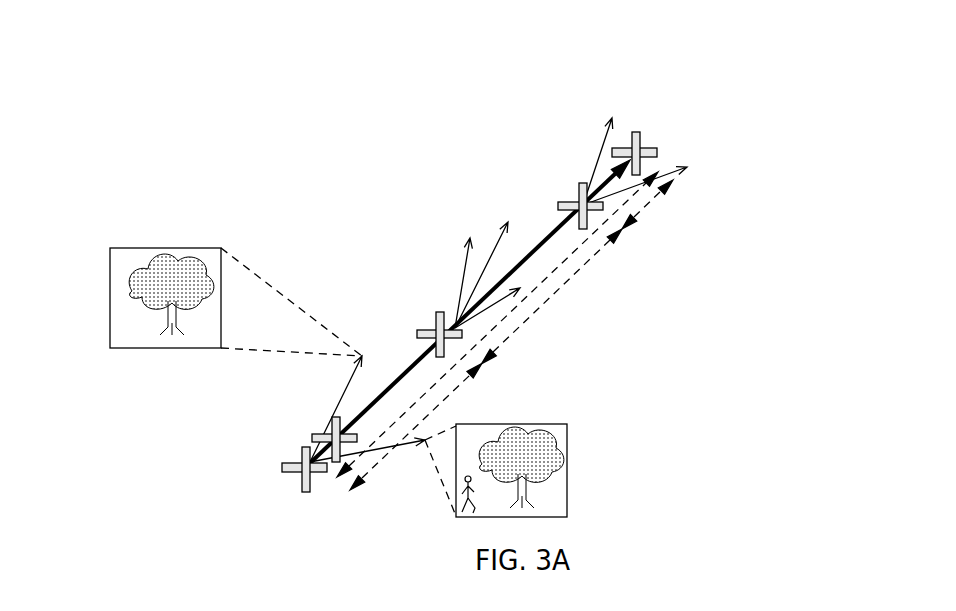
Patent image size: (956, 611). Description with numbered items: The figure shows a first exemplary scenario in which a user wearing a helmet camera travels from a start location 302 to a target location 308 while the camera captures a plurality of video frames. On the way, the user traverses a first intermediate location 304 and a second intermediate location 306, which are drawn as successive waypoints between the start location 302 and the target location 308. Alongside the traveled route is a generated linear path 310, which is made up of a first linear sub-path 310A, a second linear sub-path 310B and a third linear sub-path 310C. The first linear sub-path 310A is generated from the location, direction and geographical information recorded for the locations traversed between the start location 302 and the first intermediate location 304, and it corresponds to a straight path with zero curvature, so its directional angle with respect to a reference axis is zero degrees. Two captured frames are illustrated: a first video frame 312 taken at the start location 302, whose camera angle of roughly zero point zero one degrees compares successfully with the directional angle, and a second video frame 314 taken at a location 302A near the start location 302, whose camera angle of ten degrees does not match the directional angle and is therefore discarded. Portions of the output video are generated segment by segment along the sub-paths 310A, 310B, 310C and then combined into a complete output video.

The start location 302 is at (302, 462).
The location near the start location 302A is at (343, 412).
The first intermediate location 304 is at (430, 330).
The second intermediate location 306 is at (578, 200).
The target location 308 is at (630, 152).
The generated linear path 310 is at (527, 297).
The first linear sub-path 310A is at (432, 412).
The second linear sub-path 310B is at (552, 298).
The third linear sub-path 310C is at (643, 210).
The first video frame 312 is at (165, 247).
The second video frame 314 is at (567, 506).